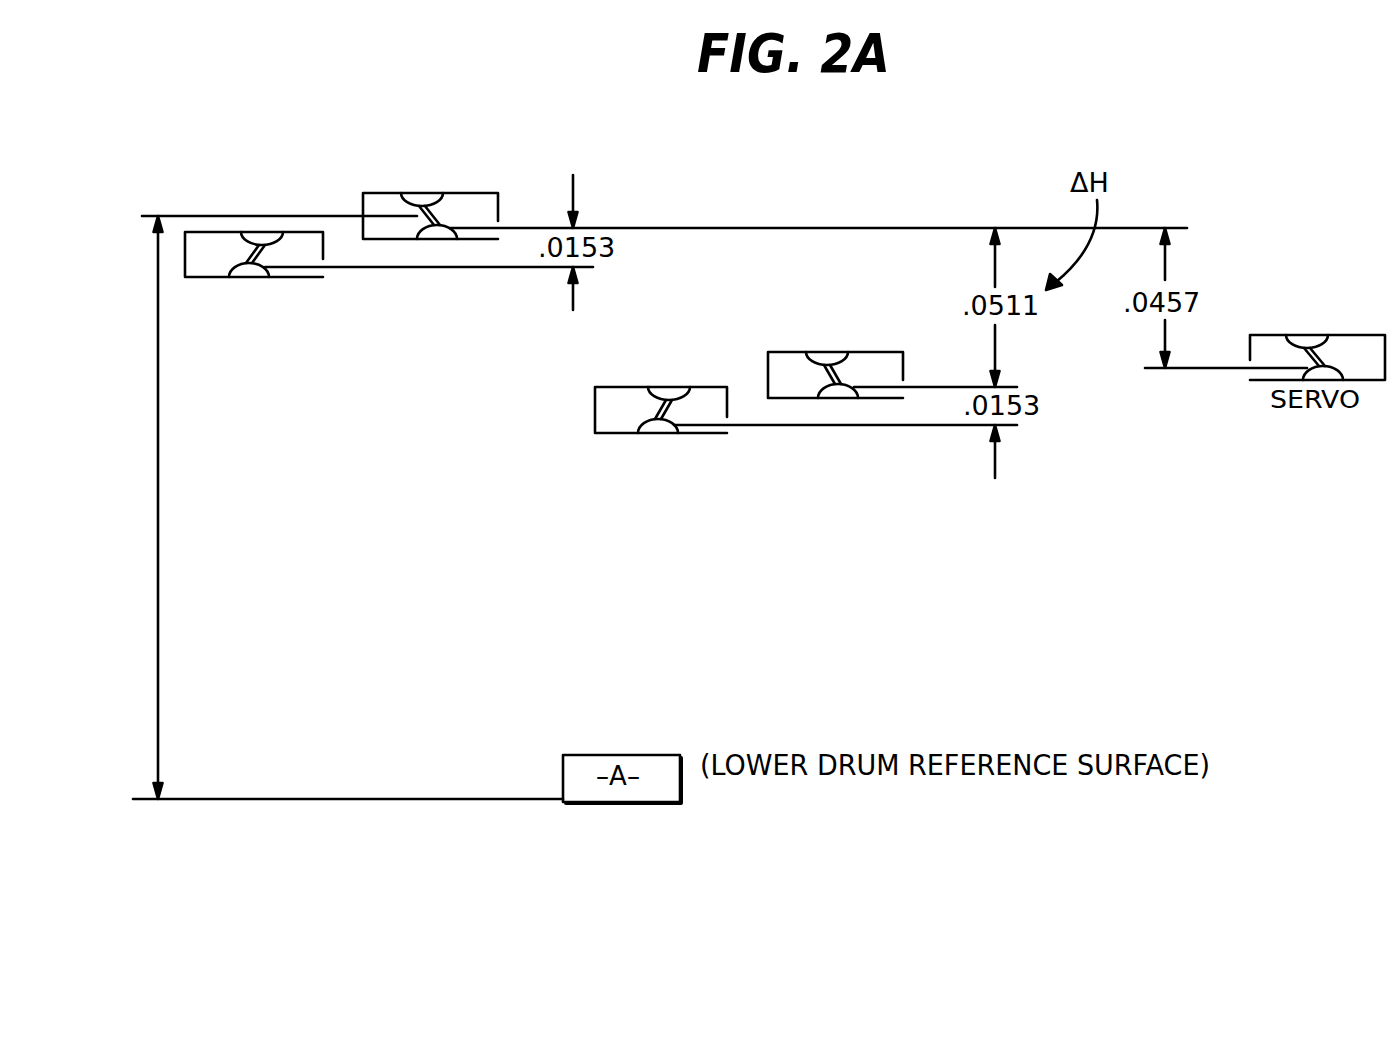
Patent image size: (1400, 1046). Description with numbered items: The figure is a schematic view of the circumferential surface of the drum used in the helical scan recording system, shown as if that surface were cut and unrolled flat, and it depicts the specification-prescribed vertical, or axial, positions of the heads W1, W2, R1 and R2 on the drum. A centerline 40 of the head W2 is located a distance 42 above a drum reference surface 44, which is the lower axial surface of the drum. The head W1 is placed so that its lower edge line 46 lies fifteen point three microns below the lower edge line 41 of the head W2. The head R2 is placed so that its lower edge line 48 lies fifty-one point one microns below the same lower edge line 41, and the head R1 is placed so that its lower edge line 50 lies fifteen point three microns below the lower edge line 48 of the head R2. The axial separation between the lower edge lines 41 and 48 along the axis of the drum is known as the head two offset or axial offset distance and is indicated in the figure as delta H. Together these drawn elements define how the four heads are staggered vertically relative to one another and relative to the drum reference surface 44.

The centerline 40 is at (244, 208).
The lower edge line 41 is at (812, 228).
The distance 42 is at (158, 525).
The drum reference surface 44 is at (323, 799).
The lower edge line 46 is at (408, 268).
The lower edge line 48 is at (1008, 387).
The lower edge line 50 is at (810, 427).
The head W1 is at (258, 278).
The head W2 is at (436, 193).
The head R1 is at (660, 436).
The head R2 is at (828, 352).